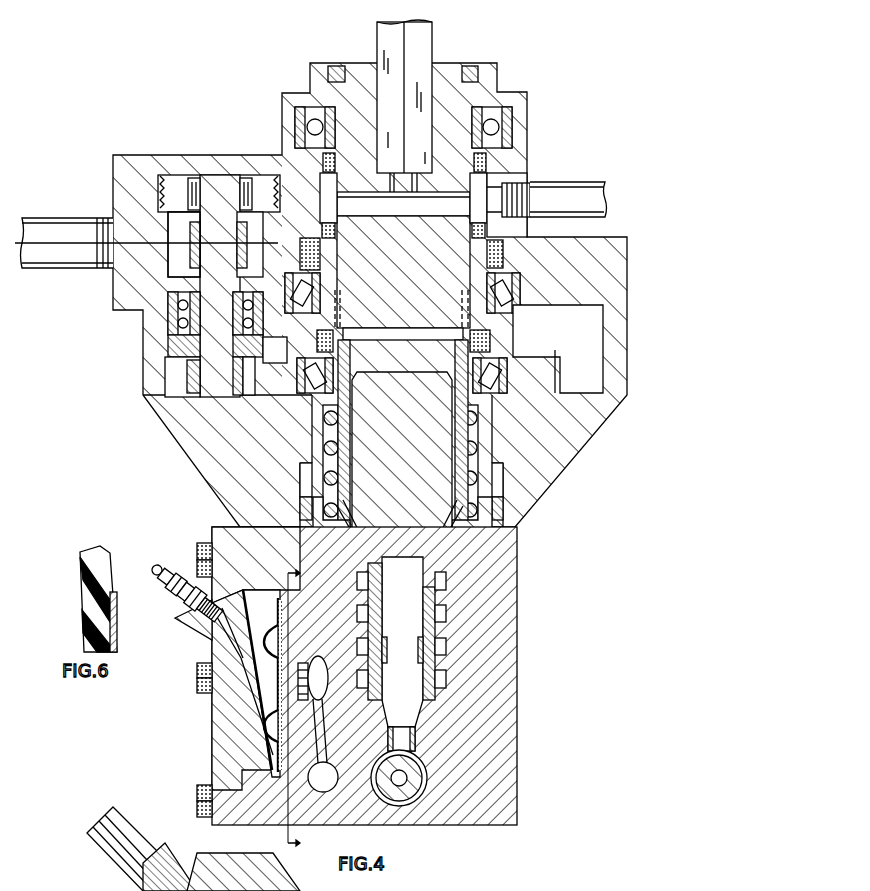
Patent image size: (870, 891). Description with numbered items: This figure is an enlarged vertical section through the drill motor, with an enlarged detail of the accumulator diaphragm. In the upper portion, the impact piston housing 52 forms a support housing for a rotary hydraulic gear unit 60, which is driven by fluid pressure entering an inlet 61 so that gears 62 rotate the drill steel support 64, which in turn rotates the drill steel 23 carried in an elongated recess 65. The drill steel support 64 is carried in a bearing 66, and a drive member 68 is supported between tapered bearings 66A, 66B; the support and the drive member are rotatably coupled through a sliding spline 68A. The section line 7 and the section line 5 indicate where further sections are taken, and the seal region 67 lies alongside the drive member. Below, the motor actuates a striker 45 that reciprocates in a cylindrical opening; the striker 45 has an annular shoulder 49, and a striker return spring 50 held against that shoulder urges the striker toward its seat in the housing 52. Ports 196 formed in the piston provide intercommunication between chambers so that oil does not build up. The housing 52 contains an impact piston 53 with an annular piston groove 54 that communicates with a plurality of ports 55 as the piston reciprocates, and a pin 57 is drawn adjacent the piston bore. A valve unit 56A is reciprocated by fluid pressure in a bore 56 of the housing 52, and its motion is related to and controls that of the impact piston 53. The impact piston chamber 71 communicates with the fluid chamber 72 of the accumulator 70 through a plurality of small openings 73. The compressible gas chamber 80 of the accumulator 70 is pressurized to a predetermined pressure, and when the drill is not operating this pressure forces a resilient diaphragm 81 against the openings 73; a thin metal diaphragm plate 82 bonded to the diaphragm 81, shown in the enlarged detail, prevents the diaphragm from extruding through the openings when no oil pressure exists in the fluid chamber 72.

In FIG. 4, the drill steel 23 is at (430, 34).
In FIG. 4, the drill steel support 64 is at (478, 70).
In FIG. 4, the elongated recess 65 is at (430, 118).
In FIG. 4, the bearing 66 is at (303, 125).
In FIG. 4, the tapered bearing 66A is at (510, 290).
In FIG. 4, the tapered bearing 66B is at (497, 380).
In FIG. 4, the sliding spline 68A is at (470, 313).
In FIG. 4, the rotary hydraulic gear unit 60 is at (218, 185).
In FIG. 4, the inlet 61 is at (80, 227).
In FIG. 4, the gear 62 is at (182, 262).
In FIG. 4, the seal assembly 67 is at (250, 398).
In FIG. 4, the drive member 68 is at (290, 393).
In FIG. 4, the section line 7- 7 is at (148, 244).
In FIG. 4, the striker 45 is at (402, 464).
In FIG. 4, the striker return spring 50 is at (477, 480).
In FIG. 4, the annular shoulder 49 is at (453, 530).
In FIG. 4, the port 196 is at (462, 555).
In FIG. 4, the pin bore 57 is at (460, 560).
In FIG. 4, the ports 55 is at (428, 617).
In FIG. 4, the annular piston groove 54 is at (418, 655).
In FIG. 4, the impact piston 53 is at (382, 631).
In FIG. 4, the impact piston housing 52 is at (510, 720).
In FIG. 4, the impact piston chamber 71 is at (401, 739).
In FIG. 4, the bore 56 is at (400, 806).
In FIG. 4, the valve unit 56A is at (418, 780).
In FIG. 4, the fluid chamber 72 is at (276, 685).
In FIG. 4, the small openings 73 is at (318, 710).
In FIG. 4, the diaphragm 81 is at (267, 683).
In FIG. 6, the diaphragm 81 is at (90, 602).
In FIG. 4, the compressible gas chamber 80 is at (253, 700).
In FIG. 4, the accumulator 70 is at (250, 733).
In FIG. 6, the diaphragm plate 82 is at (113, 592).
In FIG. 4, the section line 5- 5 is at (301, 709).